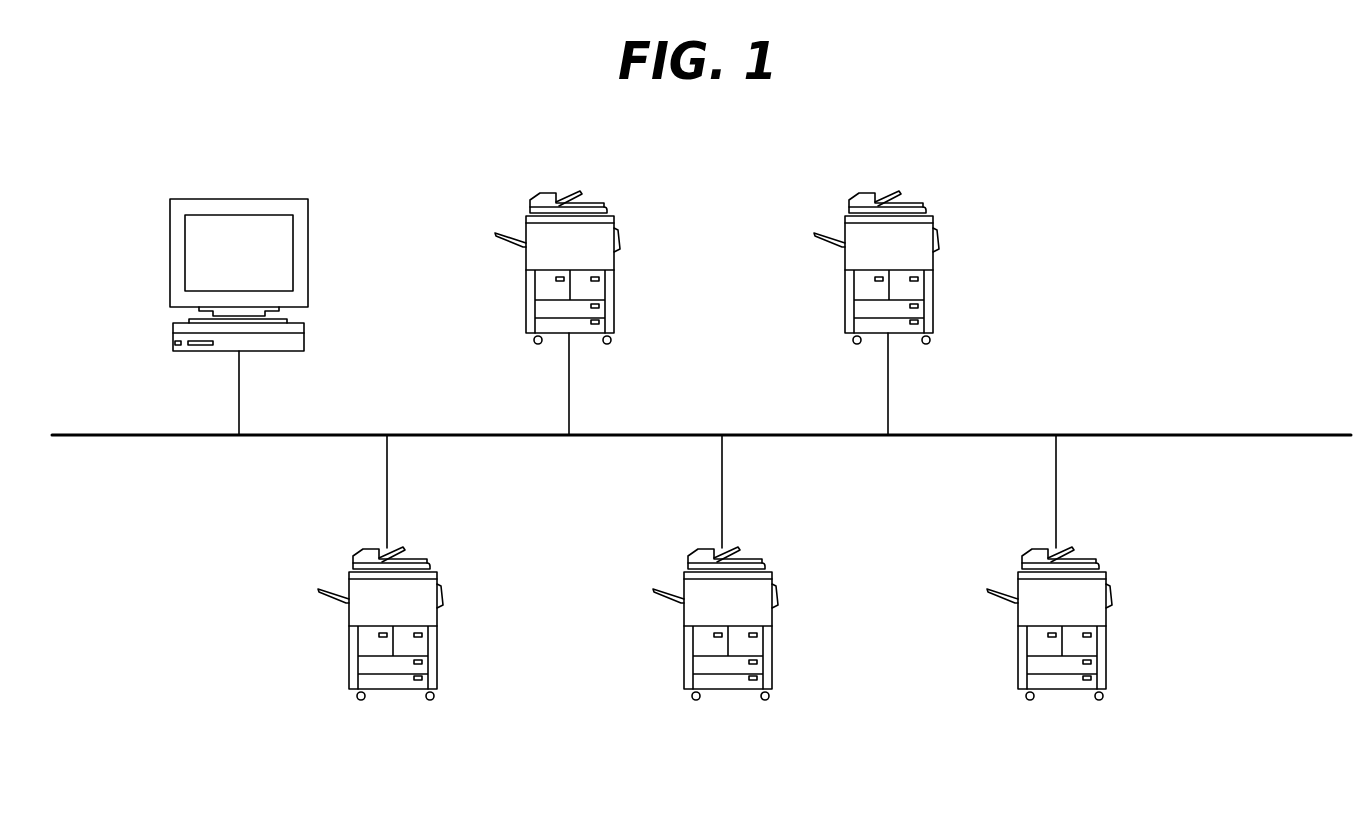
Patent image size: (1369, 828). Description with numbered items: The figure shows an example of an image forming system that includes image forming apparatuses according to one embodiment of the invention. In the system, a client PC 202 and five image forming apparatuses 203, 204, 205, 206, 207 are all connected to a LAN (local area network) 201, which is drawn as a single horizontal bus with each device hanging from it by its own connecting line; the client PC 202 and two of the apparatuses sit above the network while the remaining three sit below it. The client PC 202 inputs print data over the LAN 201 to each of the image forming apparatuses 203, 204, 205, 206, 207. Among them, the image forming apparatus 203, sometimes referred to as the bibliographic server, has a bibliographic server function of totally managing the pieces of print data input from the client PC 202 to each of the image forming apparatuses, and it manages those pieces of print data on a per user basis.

The LAN (local area network) 201 is at (1286, 433).
The client PC 202 is at (308, 250).
The image forming apparatus (bibliographic server) 203 is at (617, 298).
The image forming apparatus 204 is at (937, 298).
The image forming apparatus 205 is at (349, 637).
The image forming apparatus 206 is at (684, 637).
The image forming apparatus 207 is at (1018, 637).